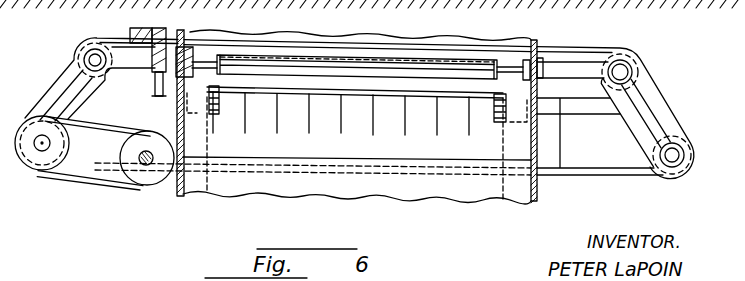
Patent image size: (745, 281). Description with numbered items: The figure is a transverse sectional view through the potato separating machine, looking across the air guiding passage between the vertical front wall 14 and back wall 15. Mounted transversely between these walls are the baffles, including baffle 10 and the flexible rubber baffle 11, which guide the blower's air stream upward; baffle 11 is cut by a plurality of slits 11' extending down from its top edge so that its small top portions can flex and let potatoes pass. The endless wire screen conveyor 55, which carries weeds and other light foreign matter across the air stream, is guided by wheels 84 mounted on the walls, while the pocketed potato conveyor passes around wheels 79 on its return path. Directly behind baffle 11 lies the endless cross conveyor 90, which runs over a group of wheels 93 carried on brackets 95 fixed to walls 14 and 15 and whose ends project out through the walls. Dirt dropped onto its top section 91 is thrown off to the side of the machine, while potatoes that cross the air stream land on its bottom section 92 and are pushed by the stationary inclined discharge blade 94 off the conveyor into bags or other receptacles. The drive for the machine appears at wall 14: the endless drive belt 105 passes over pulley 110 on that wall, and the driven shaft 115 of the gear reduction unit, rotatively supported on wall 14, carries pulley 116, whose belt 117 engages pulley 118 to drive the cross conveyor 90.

The baffle 10 is at (407, 190).
The baffle 11 is at (357, 160).
The slits 11' is at (341, 125).
The front wall 14 is at (176, 198).
The back wall 15 is at (531, 208).
The wire screen conveyor 55 is at (332, 55).
The wheels 79 is at (219, 118).
The wheels 84 is at (388, 65).
The endless cross conveyor 90 is at (670, 108).
The top section 91 is at (116, 34).
The bottom section 92 is at (90, 176).
The wheels 93 is at (89, 45).
The stationary inclined discharge blade 94 is at (600, 160).
The brackets 95 is at (78, 87).
The endless drive belt 105 is at (156, 88).
The pulley 110 is at (165, 30).
The driven shaft 115 is at (147, 165).
The pulley 116 is at (135, 180).
The belt 117 is at (107, 184).
The pulley 118 is at (35, 118).